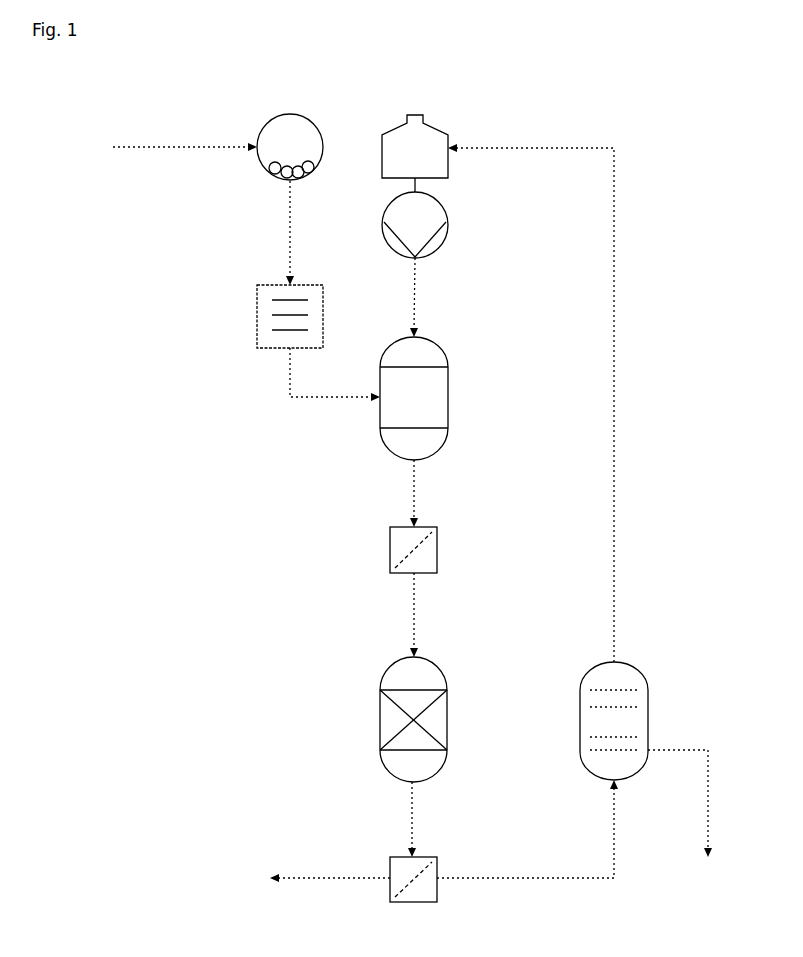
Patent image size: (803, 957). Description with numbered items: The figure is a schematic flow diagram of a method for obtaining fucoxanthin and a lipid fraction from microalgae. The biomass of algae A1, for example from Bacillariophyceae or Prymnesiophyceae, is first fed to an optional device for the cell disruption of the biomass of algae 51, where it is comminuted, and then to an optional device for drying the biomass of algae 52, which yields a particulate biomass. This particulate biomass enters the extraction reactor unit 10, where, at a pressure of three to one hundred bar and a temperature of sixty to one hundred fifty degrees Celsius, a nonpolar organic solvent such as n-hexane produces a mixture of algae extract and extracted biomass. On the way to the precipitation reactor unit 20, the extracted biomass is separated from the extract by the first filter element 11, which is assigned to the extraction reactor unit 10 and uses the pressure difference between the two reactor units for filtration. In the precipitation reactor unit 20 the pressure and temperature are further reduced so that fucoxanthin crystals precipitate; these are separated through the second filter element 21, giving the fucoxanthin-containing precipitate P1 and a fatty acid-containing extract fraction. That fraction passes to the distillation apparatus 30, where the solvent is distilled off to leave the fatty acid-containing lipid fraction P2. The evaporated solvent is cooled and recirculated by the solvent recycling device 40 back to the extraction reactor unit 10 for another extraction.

The extraction reactor unit 10 is at (454, 397).
The first filter element 11 is at (457, 550).
The precipitation reactor unit 20 is at (452, 719).
The second filter element 21 is at (457, 858).
The distillation apparatus 30 is at (655, 721).
The solvent recycling device 40 is at (454, 186).
The device for the cell disruption of the biomass of algae 51 is at (255, 135).
The device for drying the biomass of algae 52 is at (253, 316).
The biomass of algae A1 is at (84, 147).
The fucoxanthin-containing precipitate P1 is at (240, 880).
The fatty acid-containing lipid fraction P2 is at (708, 877).